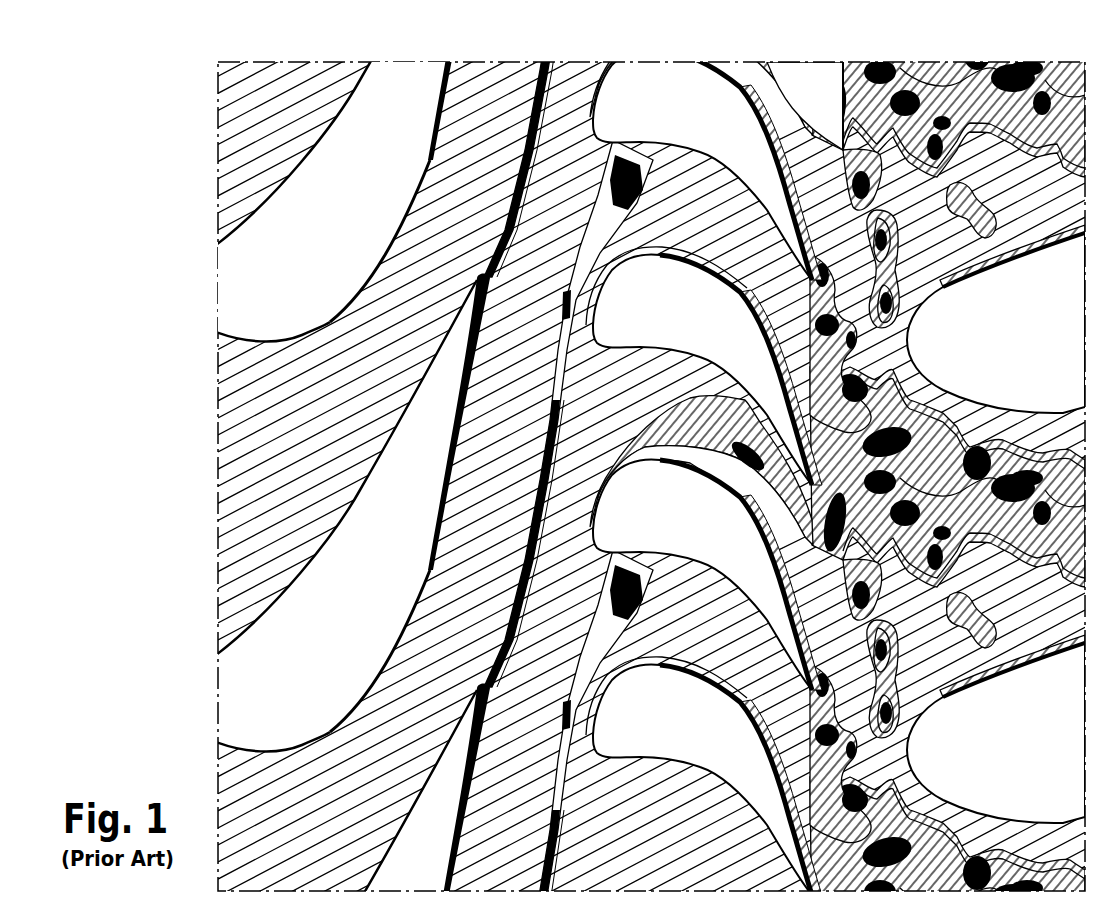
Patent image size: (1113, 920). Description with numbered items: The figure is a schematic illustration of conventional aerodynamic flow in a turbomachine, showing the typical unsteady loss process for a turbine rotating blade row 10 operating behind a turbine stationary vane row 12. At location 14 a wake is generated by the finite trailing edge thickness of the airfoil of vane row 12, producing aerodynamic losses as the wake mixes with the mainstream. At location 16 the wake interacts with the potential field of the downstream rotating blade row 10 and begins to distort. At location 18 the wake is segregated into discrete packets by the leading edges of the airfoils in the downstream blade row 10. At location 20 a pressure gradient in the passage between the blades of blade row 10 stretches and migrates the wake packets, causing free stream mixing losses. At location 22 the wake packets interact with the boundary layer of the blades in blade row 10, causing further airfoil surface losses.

The turbine rotating blade row 10 is at (706, 140).
The turbine stationary vane row 12 is at (411, 60).
The wake generation location 14 is at (478, 640).
The wake distortion location 16 is at (558, 259).
The wake segregation location 18 is at (643, 526).
The wake stretching and migration location 20 is at (725, 441).
The boundary layer interaction location 22 is at (849, 476).